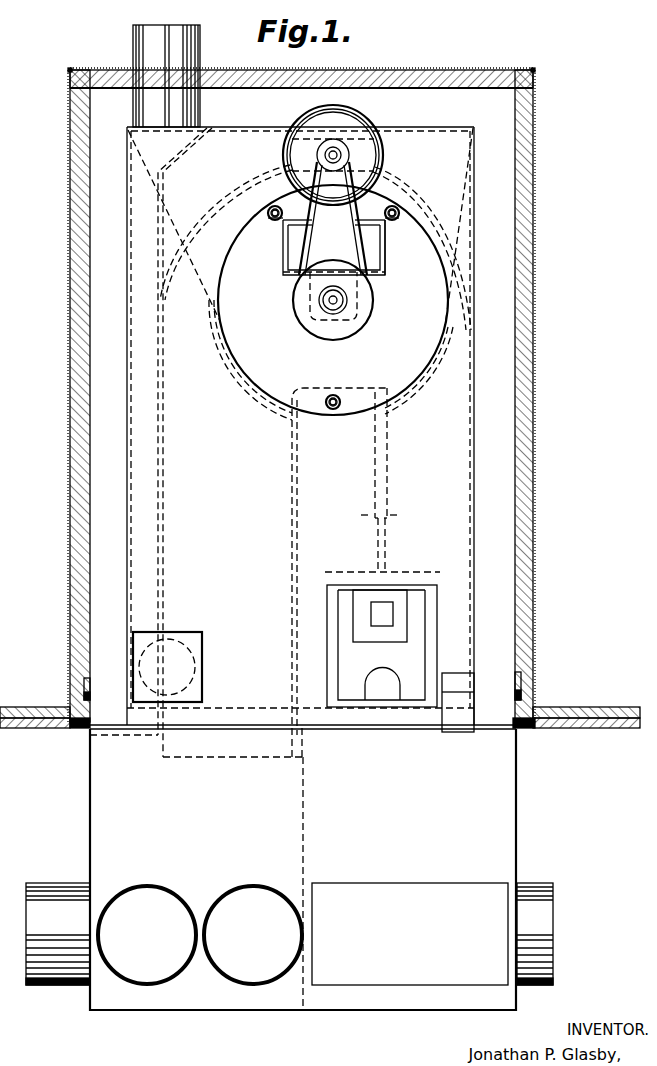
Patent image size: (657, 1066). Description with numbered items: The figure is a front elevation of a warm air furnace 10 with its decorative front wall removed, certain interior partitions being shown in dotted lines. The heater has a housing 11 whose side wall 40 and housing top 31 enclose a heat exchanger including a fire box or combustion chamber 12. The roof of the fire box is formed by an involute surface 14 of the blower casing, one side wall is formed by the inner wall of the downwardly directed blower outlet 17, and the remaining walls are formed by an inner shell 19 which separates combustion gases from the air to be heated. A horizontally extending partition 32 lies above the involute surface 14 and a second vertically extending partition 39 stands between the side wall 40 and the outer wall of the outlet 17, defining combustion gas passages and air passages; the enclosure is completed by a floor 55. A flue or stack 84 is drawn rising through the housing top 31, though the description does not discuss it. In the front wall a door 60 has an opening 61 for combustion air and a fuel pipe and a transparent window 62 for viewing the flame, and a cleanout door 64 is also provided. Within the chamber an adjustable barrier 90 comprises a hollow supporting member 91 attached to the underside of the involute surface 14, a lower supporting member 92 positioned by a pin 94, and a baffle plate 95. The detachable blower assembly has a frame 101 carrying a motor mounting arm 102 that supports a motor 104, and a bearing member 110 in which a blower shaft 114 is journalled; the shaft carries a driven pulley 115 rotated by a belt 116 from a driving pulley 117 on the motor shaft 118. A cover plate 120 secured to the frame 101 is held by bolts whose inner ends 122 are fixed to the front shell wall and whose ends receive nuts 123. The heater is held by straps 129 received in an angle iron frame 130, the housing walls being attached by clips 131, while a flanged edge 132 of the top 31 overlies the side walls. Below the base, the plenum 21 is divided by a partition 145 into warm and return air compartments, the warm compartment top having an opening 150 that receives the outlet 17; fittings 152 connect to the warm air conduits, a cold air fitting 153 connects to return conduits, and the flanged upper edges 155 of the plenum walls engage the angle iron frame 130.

The warm air furnace 10 is at (535, 275).
The housing 11 is at (462, 70).
The combustion chamber 12 is at (472, 508).
The involute surface 14 is at (404, 392).
The blower casing outlet 17 is at (298, 530).
The inner shell 19 is at (474, 405).
The plenum 21 is at (518, 846).
The housing top 31 is at (352, 72).
The horizontally extending partition 32 is at (433, 127).
The second vertically extending partition 39 is at (127, 368).
The side wall 40 is at (70, 360).
The floor 55 is at (495, 731).
The door 60 is at (416, 636).
The opening 61 is at (394, 682).
The transparent window 62 is at (386, 614).
The cleanout door 64 is at (198, 666).
The chimney 84 is at (198, 58).
The adjustable barrier 90 is at (389, 479).
The hollow supporting member 91 is at (375, 458).
The lower supporting member 92 is at (387, 545).
The pin 94 is at (396, 512).
The baffle plate 95 is at (408, 571).
The frame 101 is at (386, 250).
The motor mounting arm 102 is at (362, 210).
The motor 104 is at (370, 125).
The bearing member 110 is at (355, 300).
The blower shaft 114 is at (330, 306).
The driven pulley 115 is at (340, 334).
The belt 116 is at (303, 242).
The driving pulley 117 is at (348, 153).
The motor shaft 118 is at (300, 153).
The cover plate 120 is at (248, 368).
The bolt inner ends 122 is at (268, 213).
The nuts 123 is at (273, 206).
The connecting members 129 is at (457, 712).
The angle iron frame 130 is at (74, 704).
The clips 131 is at (86, 690).
The flanged edge 132 is at (70, 72).
The partition 145 is at (306, 841).
The opening 150 is at (212, 758).
The fittings 152 is at (182, 900).
The cold air fitting 153 is at (405, 886).
The flanged upper edges 155 is at (88, 734).